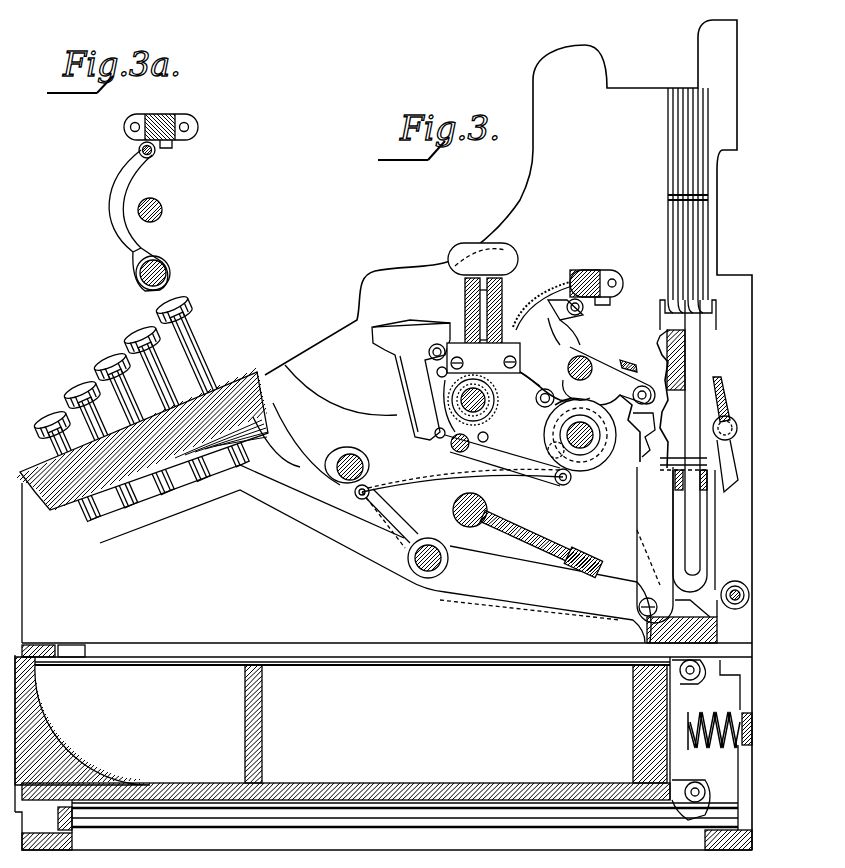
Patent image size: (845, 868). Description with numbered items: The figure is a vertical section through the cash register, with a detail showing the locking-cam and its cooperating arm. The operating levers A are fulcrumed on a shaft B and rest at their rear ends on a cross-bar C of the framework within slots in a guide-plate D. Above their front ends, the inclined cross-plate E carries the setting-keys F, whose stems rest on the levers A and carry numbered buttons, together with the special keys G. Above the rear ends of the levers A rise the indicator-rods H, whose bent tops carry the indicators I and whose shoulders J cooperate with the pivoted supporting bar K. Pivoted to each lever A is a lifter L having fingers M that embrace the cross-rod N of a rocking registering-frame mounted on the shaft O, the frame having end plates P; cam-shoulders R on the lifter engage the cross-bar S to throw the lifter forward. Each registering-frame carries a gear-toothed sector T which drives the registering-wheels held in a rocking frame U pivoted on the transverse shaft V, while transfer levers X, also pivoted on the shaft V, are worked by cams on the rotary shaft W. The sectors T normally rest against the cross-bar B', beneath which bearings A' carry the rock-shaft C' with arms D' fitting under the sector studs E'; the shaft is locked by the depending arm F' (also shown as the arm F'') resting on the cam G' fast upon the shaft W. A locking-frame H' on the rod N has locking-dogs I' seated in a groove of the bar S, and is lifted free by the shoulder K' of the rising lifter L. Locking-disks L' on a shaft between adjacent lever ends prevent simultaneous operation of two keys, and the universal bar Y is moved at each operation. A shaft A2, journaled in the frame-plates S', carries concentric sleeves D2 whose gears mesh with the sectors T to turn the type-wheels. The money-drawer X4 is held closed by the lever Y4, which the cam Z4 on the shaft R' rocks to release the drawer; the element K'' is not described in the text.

In FIG. 3A, the cross-bar B' is at (161, 113).
In FIG. 3A, the operating levers A is at (186, 150).
In FIG. 3, the operating levers A is at (322, 501).
In FIG. 3A, the rock-shaft C' is at (159, 159).
In FIG. 3, the rock-shaft C' is at (550, 338).
In FIG. 3A, the arm F'' is at (115, 201).
In FIG. 3A, the shaft O is at (163, 210).
In FIG. 3, the shaft O is at (567, 366).
In FIG. 3A, the cam G' is at (134, 269).
In FIG. 3A, the rotary shaft W is at (140, 286).
In FIG. 3, the rotary shaft W is at (580, 470).
In FIG. 3, the setting-keys F is at (143, 410).
In FIG. 3, the special keys G is at (216, 319).
In FIG. 3, the arm F' is at (172, 370).
In FIG. 3, the inclined cross-plate E is at (142, 427).
In FIG. 3, the cam Z4 is at (318, 460).
In FIG. 3, the frame-plates S' is at (341, 390).
In FIG. 3, the shaft R' is at (349, 464).
In FIG. 3, the shaft B is at (491, 554).
In FIG. 3, the lever Y4 is at (540, 610).
In FIG. 3, the universal bar Y is at (530, 540).
In FIG. 3, the rocking frame U is at (428, 416).
In FIG. 3, the shaft A2 is at (492, 419).
In FIG. 3, the concentric sleeves D2 is at (489, 426).
In FIG. 3, the transverse shaft V is at (447, 452).
In FIG. 3, the levers X is at (532, 450).
In FIG. 3, the end plates P is at (612, 366).
In FIG. 3, the cross-rod N is at (634, 390).
In FIG. 3, the locking-frame H' is at (628, 354).
In FIG. 3, the fingers M is at (638, 447).
In FIG. 3, the cam-shoulders R is at (637, 355).
In FIG. 3, the bearings A' is at (610, 303).
In FIG. 3, the gear-toothed sectors T is at (537, 285).
In FIG. 3, the arms D' is at (550, 311).
In FIG. 3, the stud E' is at (553, 332).
In FIG. 3, the indicators I is at (670, 194).
In FIG. 3, the locking-dogs I' is at (679, 318).
In FIG. 3, the shoulder K' is at (700, 360).
In FIG. 3, the cross-bar S is at (692, 437).
In FIG. 3, the indicator-rods H is at (678, 531).
In FIG. 3, the shoulders J is at (668, 462).
In FIG. 3, the lifter L is at (638, 545).
In FIG. 3, the supporting bar K is at (727, 433).
In FIG. 3, the guide-plate D is at (726, 530).
In FIG. 3, the locking-disks L' is at (733, 584).
In FIG. 3, the pin K'' is at (741, 585).
In FIG. 3, the cross-bar C is at (693, 621).
In FIG. 3, the money-drawer X4 is at (341, 782).